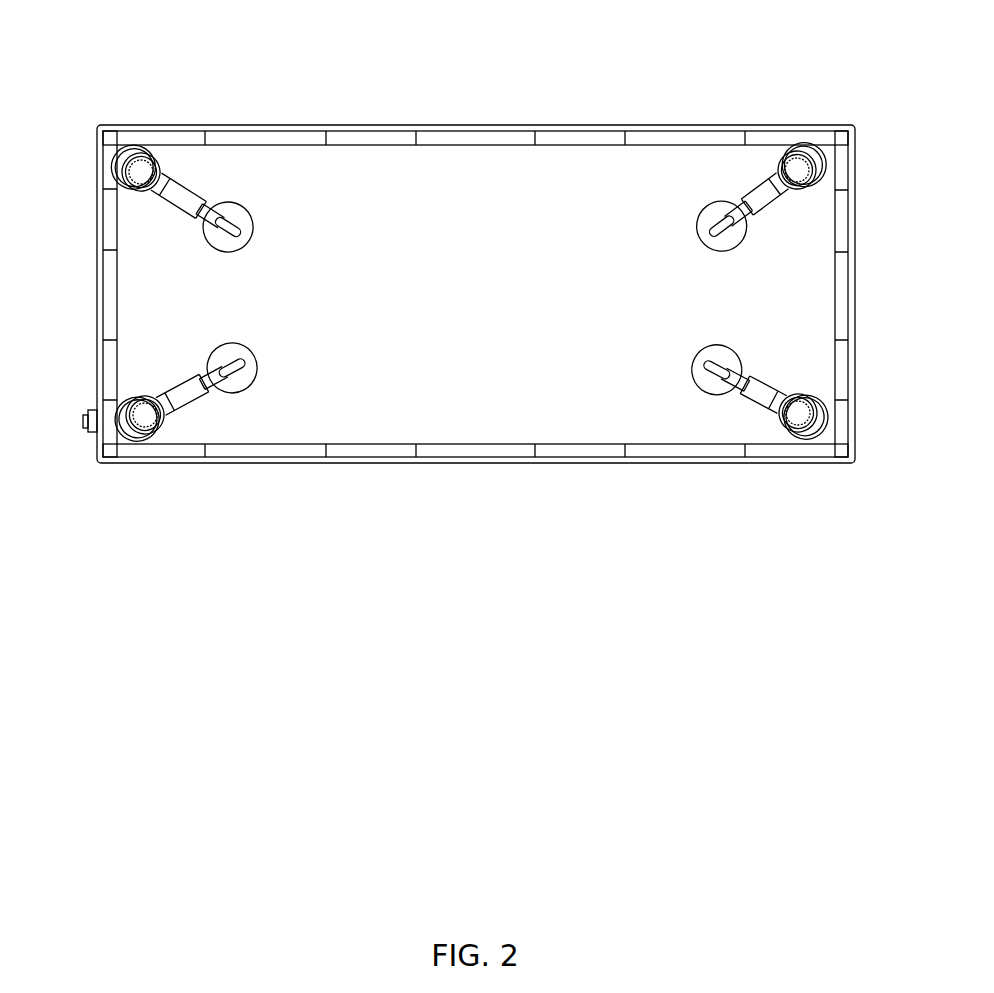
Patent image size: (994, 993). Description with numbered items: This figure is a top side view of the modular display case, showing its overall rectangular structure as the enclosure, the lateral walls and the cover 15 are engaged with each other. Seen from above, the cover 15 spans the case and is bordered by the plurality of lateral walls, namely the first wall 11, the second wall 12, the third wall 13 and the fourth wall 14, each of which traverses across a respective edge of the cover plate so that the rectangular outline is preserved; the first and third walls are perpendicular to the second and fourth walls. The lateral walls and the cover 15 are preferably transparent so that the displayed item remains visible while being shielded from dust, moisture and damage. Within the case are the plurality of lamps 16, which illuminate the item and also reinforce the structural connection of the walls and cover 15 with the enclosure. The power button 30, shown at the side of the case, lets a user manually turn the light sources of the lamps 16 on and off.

The first wall 11 is at (301, 141).
The second wall 12 is at (842, 223).
The third wall 13 is at (562, 450).
The fourth wall 14 is at (105, 227).
The cover 15 is at (166, 129).
The lamp 16 is at (258, 240).
The power button 30 is at (83, 421).